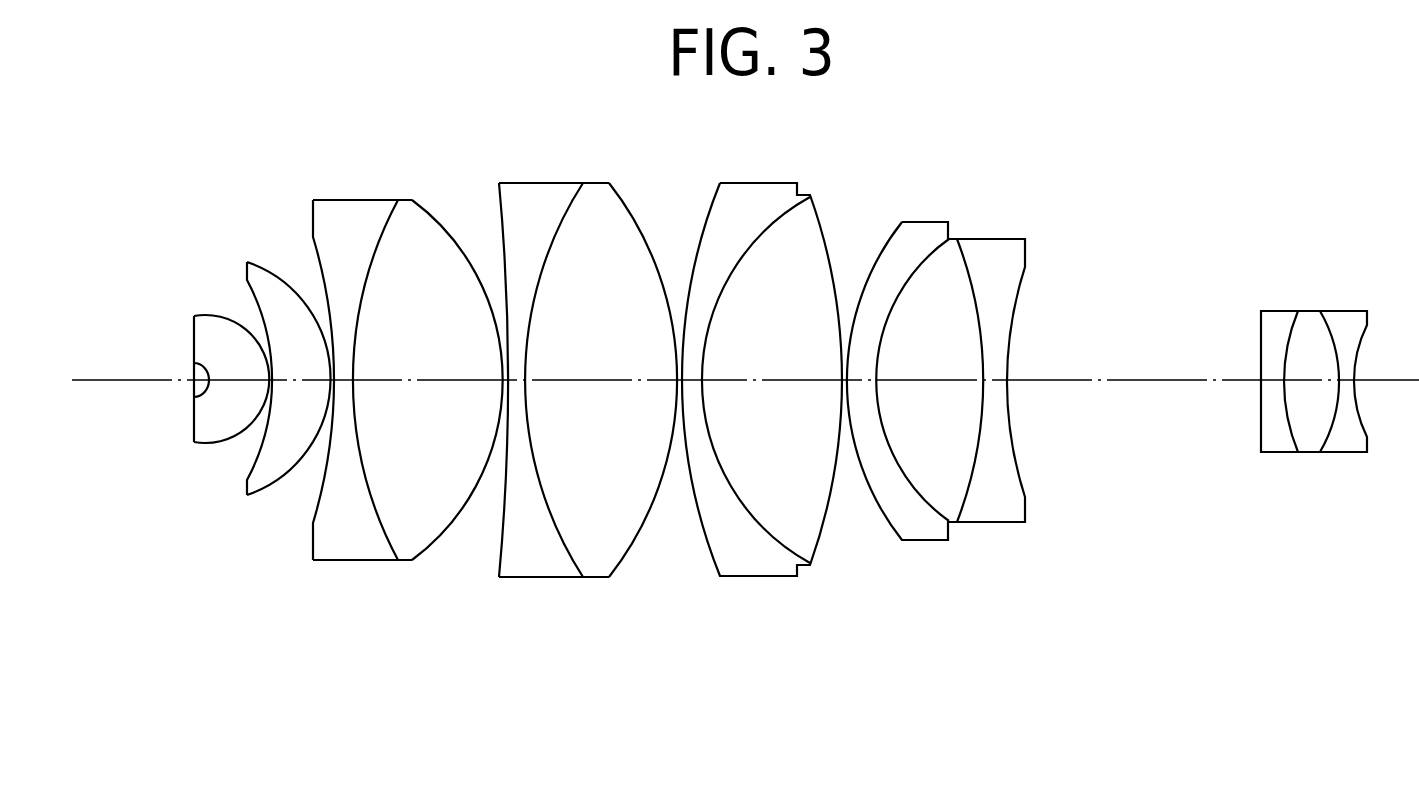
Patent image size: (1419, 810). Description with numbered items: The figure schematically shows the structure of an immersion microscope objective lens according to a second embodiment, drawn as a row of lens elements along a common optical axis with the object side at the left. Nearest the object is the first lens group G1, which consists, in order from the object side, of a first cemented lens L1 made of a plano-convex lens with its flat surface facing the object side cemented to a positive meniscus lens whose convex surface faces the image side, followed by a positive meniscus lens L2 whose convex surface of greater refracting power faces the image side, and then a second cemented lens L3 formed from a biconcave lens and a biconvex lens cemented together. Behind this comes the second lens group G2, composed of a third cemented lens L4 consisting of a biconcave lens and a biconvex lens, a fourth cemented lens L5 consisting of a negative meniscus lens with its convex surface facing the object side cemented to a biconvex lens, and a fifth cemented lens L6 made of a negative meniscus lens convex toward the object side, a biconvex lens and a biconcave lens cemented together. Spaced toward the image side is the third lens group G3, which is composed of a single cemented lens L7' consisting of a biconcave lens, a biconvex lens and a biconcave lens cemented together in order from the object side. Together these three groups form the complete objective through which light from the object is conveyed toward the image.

The first cemented lens L1 is at (212, 443).
The positive meniscus lens L2 is at (272, 490).
The second cemented lens L3 is at (408, 433).
The third cemented lens L4 is at (574, 578).
The fourth cemented lens L5 is at (767, 579).
The fifth cemented lens L6 is at (936, 431).
The cemented lens L7' is at (1314, 430).
The first lens group G1 is at (343, 469).
The second lens group G2 is at (773, 461).
The third lens group G3 is at (1322, 470).